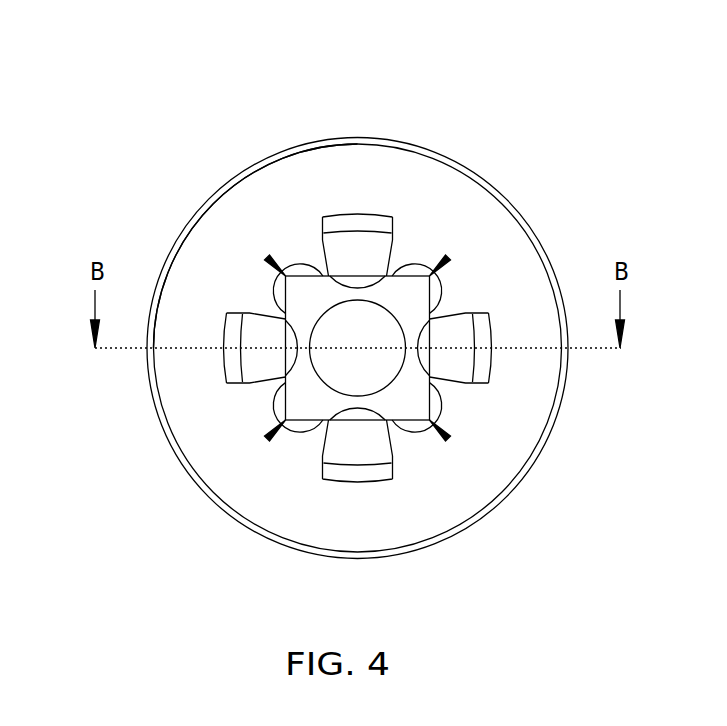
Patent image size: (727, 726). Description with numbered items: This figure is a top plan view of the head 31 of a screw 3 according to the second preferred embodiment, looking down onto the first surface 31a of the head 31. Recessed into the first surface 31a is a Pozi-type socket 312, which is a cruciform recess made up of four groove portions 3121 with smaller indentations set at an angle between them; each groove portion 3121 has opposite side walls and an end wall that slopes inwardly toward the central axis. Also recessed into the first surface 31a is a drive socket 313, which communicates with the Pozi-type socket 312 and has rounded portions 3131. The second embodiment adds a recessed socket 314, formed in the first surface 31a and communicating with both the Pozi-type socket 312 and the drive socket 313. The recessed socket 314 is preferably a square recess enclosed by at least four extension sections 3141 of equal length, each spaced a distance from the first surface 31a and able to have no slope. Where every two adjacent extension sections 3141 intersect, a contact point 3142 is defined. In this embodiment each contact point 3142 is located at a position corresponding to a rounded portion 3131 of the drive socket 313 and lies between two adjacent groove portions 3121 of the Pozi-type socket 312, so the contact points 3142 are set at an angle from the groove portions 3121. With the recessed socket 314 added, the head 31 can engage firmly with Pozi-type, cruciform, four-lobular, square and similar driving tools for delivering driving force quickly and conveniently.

The screw 3 is at (262, 145).
The head 31 is at (196, 190).
The first surface 31a is at (225, 248).
The Pozi-type socket 312 is at (358, 497).
The groove portion 3121 is at (330, 477).
The drive socket 313 is at (263, 406).
The recessed socket 314 is at (442, 285).
The rounded portion 3131 is at (418, 433).
The extension section 3141 is at (436, 378).
The contact point 3142 is at (436, 421).